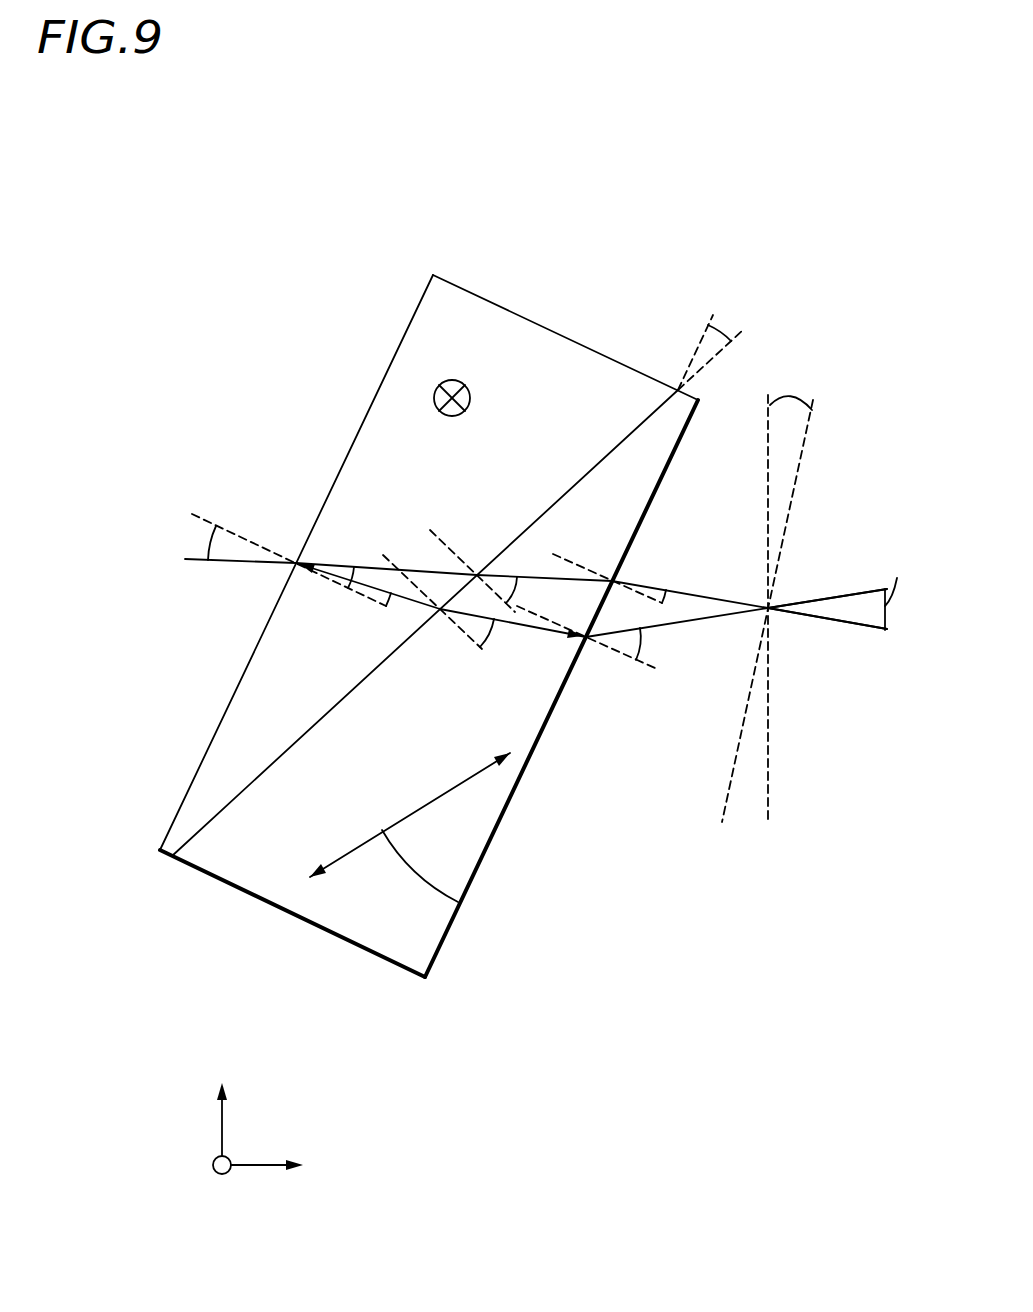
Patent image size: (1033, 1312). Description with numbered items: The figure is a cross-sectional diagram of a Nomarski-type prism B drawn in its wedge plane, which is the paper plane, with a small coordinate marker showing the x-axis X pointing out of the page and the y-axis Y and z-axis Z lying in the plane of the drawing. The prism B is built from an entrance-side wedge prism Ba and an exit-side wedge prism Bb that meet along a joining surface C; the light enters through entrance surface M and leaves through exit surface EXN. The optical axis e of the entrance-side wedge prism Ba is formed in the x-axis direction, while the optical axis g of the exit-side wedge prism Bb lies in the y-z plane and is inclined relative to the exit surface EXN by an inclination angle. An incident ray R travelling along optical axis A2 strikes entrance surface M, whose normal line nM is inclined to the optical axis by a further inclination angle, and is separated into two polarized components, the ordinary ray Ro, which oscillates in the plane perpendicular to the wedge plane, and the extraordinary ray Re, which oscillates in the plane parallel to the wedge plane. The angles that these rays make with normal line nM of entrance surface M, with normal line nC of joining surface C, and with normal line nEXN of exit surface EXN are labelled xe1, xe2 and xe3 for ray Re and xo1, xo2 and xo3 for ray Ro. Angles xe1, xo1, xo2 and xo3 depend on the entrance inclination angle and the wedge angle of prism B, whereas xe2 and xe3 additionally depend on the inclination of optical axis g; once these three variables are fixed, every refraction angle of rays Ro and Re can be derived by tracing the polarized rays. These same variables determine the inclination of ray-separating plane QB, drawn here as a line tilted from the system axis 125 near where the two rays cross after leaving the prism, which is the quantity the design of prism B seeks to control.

The prism B is at (326, 281).
The entrance surface M is at (422, 295).
The entrance-side wedge prism Ba is at (515, 330).
The exit-side wedge prism Bb is at (390, 933).
The joining surface C is at (207, 828).
The exit surface EXN is at (442, 945).
The optical axis of entrance-side wedge prism e is at (434, 403).
The optical axis of exit-side wedge prism g is at (362, 845).
The incident ray R is at (222, 559).
The optical axis A2 is at (228, 566).
The normal line of entrance surface nM is at (225, 532).
The refraction angle of extraordinary ray at entrance surface xe1 is at (352, 567).
The refraction angle of ordinary ray at entrance surface xo1 is at (391, 603).
The normal line of joining surface nC is at (467, 560).
The refraction angle of ordinary ray at joining surface xo2 is at (494, 630).
The refraction angle of extraordinary ray at joining surface xe2 is at (517, 605).
The normal line of exit surface nEXN is at (607, 647).
The refraction angle of extraordinary ray at exit surface xe3 is at (688, 598).
The refraction angle of ordinary ray at exit surface xo3 is at (645, 647).
The optical axis 125 is at (768, 772).
The ray-separating plane QB is at (727, 793).
The ordinary light ray Ro is at (875, 590).
The extraordinary light ray Re is at (850, 628).
The x-axis X is at (206, 1182).
The y-axis Y is at (222, 1103).
The z-axis Z is at (283, 1176).